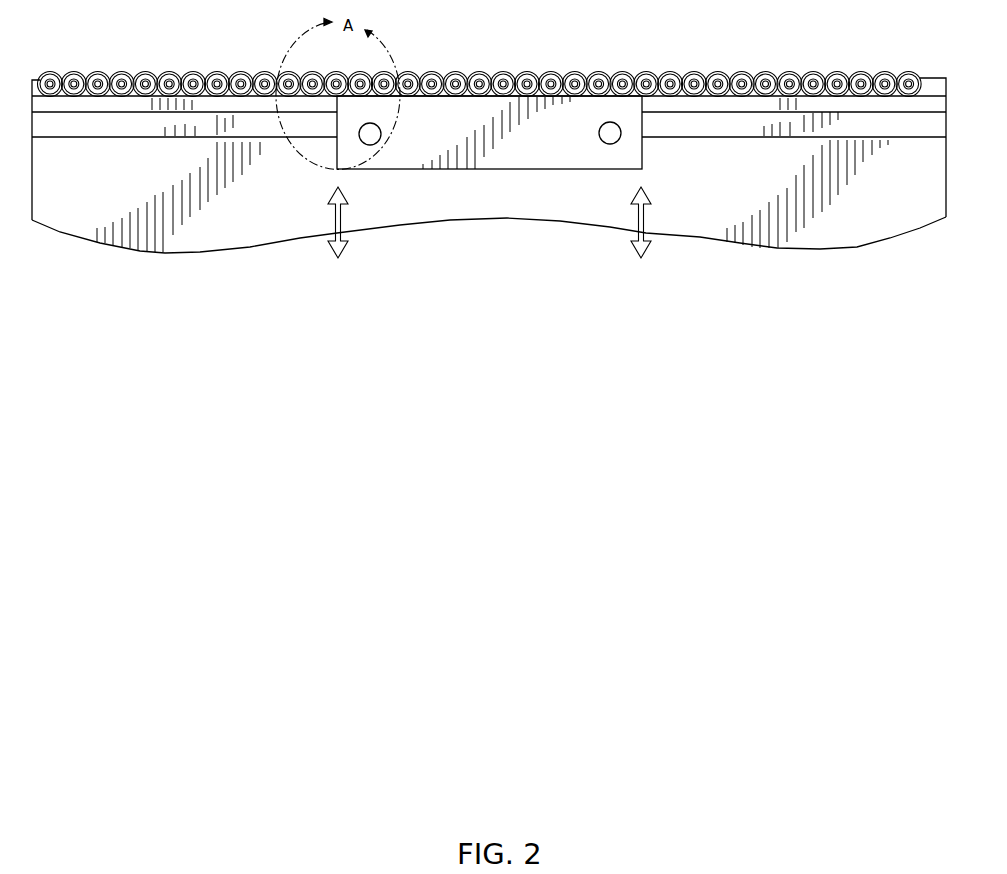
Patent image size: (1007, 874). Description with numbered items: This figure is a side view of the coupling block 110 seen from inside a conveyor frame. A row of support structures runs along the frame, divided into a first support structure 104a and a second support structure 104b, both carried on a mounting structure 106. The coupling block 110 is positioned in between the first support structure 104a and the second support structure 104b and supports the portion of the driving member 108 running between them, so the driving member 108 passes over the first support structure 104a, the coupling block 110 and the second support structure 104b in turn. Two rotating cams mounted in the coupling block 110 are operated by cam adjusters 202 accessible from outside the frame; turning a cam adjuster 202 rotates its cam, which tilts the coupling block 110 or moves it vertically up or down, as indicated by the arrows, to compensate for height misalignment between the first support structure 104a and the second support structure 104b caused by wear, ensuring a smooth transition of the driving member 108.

The first support structure 104a is at (148, 108).
The second support structure 104b is at (778, 112).
The mounting structure 106 is at (720, 127).
The driving member 108 is at (838, 83).
The coupling block 110 is at (485, 130).
The cam adjuster 202 is at (611, 145).